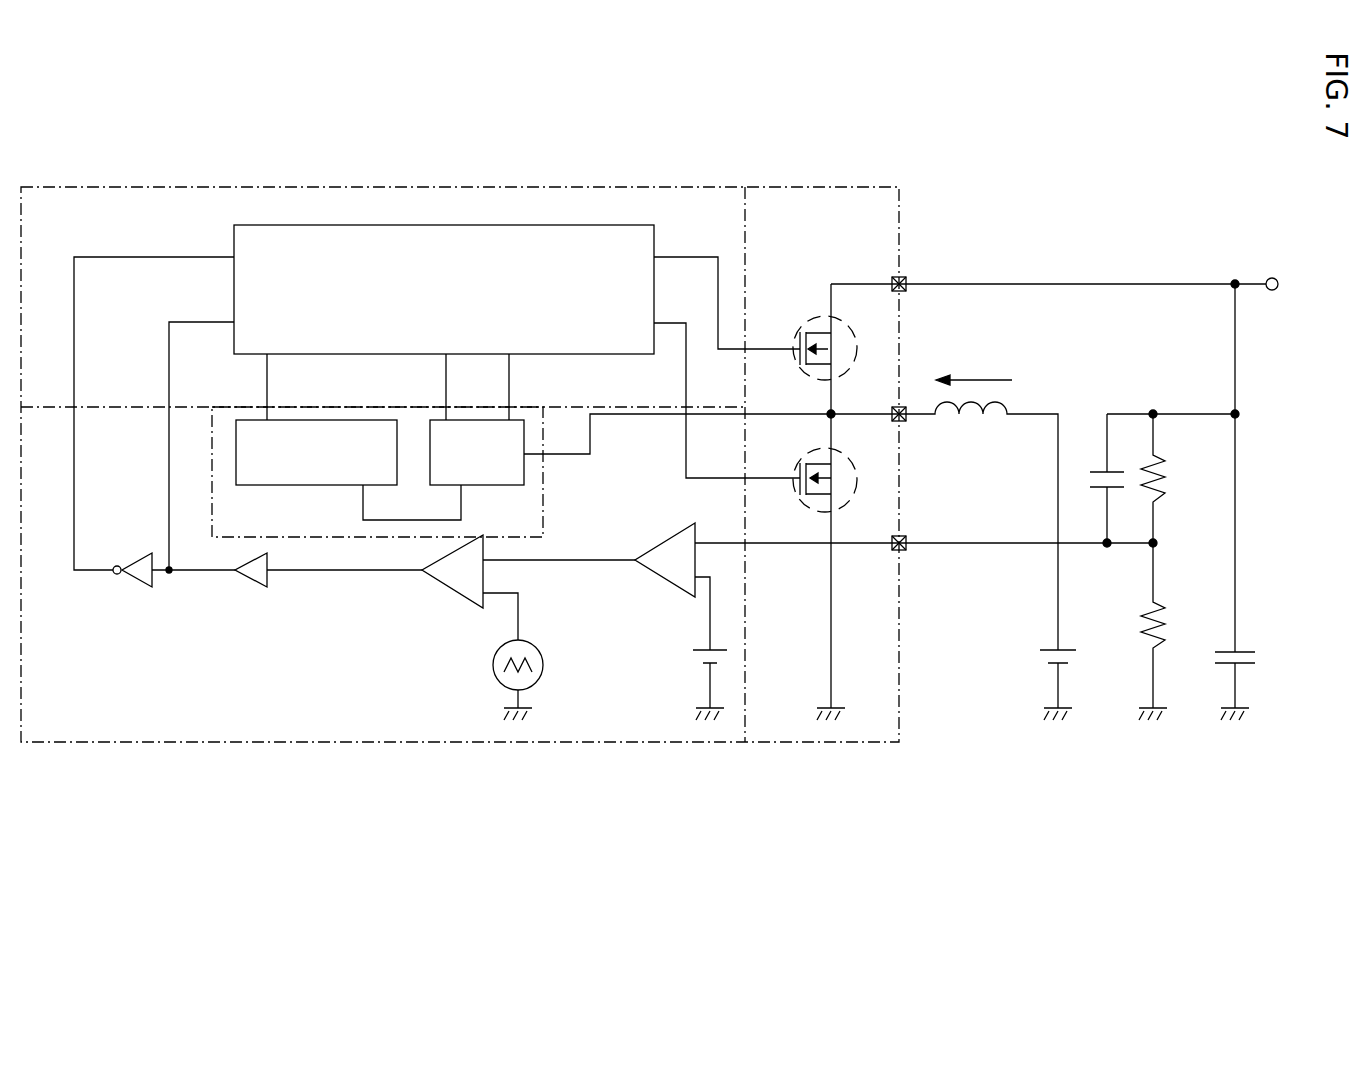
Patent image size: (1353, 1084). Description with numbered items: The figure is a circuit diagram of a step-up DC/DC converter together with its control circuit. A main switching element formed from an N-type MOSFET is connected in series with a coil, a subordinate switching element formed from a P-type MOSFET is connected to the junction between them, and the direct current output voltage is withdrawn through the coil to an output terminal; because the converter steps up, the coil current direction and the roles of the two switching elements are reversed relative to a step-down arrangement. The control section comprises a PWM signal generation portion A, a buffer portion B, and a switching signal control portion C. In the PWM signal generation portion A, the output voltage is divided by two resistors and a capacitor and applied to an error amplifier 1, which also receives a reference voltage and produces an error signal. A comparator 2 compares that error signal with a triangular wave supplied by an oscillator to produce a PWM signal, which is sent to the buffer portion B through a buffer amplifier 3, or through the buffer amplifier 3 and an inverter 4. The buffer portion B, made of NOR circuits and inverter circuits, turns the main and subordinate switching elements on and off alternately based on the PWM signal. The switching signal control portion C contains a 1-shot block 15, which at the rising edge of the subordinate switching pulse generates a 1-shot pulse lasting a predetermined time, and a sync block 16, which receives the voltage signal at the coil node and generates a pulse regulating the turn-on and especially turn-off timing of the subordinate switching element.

The error amplifier 1 is at (662, 568).
The comparator 2 is at (448, 615).
The buffer amplifier 3 is at (248, 573).
The inverter 4 is at (140, 573).
The 1-shot block 15 is at (268, 485).
The sync block 16 is at (515, 485).
The PWM signal generation portion A is at (388, 725).
The buffer portion B is at (572, 240).
The switching signal control portion C is at (377, 609).